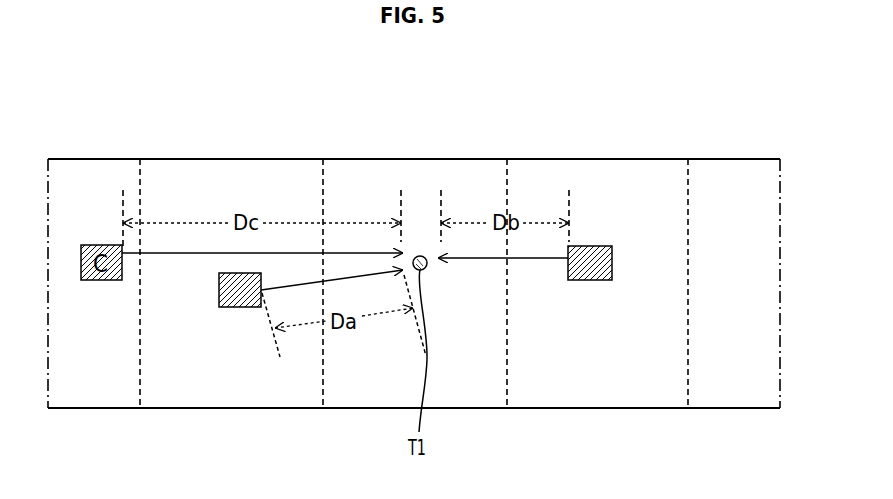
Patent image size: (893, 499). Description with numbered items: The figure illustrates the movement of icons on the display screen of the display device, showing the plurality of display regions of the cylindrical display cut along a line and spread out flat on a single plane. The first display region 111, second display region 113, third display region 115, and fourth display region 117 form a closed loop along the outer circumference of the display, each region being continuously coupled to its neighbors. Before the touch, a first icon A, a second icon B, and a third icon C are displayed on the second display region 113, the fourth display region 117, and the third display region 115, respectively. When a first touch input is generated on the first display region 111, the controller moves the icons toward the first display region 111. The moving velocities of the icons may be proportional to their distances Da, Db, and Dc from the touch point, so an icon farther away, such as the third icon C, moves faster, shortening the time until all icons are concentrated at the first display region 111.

The first display region 111 is at (412, 190).
The second display region 113 is at (236, 190).
The third display region 115 is at (79, 190).
The fourth display region 117 is at (583, 190).